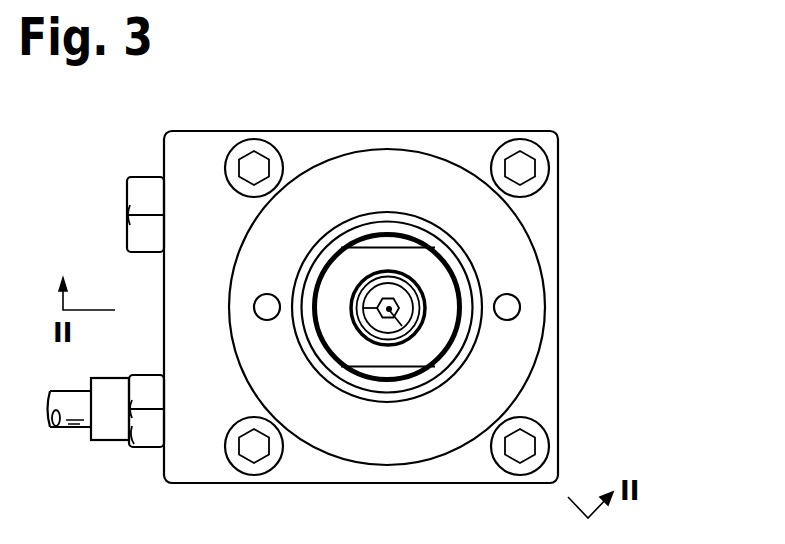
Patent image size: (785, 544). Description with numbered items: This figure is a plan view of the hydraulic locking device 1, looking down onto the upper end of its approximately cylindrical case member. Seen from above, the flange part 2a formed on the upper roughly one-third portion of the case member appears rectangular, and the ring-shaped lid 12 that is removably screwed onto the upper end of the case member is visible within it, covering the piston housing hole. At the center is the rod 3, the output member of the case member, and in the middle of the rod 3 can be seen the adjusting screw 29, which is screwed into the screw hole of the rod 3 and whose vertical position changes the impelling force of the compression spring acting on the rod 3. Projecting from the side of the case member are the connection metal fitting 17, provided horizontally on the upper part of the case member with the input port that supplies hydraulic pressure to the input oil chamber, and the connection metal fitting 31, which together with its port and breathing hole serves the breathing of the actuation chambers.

The hydraulic locking device 1 is at (387, 299).
The flange part 2a is at (558, 237).
The rod 3 is at (417, 258).
The ring-shaped lid 12 is at (517, 333).
The connection metal fitting 17 is at (136, 428).
The adjusting screw 29 is at (400, 293).
The connection metal fitting 31 is at (145, 185).